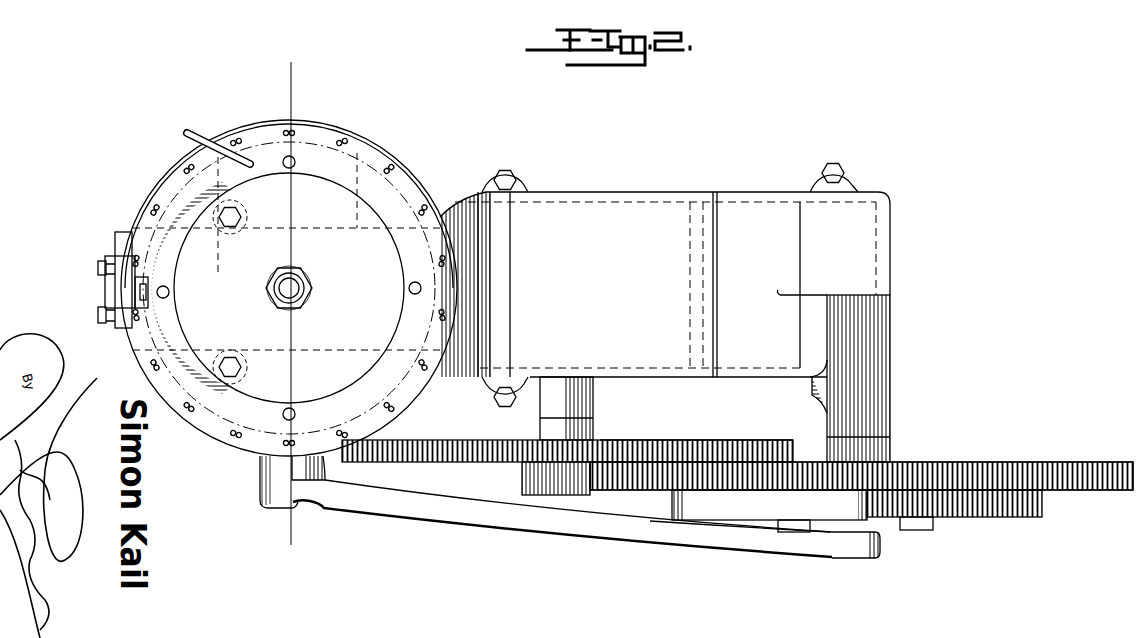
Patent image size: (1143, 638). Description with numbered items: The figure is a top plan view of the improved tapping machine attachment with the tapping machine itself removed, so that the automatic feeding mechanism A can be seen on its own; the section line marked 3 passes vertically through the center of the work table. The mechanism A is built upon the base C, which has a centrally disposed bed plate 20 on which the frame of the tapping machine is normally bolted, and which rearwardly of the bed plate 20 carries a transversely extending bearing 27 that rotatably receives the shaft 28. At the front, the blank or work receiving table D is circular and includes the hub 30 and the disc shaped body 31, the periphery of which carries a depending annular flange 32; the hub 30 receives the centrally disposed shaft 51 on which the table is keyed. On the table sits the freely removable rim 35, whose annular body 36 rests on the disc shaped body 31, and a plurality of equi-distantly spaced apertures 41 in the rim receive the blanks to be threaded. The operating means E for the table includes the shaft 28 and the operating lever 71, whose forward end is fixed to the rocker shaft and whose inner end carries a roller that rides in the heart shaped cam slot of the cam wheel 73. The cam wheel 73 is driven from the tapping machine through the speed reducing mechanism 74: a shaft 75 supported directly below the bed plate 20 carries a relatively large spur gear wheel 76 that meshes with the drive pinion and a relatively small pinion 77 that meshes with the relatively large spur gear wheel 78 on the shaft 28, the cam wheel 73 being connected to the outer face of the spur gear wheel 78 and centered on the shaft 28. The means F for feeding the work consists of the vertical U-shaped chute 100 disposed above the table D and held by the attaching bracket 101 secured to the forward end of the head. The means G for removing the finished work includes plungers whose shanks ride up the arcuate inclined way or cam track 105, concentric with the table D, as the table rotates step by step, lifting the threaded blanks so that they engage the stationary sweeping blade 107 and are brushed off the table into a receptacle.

The section line 3- 3 is at (289, 308).
The bed plate 20 is at (598, 215).
The bearing 27 is at (862, 342).
The shaft 28 is at (875, 452).
The hub 30 is at (312, 292).
The disc shaped body 31 is at (333, 163).
The depending annular flange 32 is at (868, 530).
The rim 35 is at (313, 213).
The annular body 36 is at (930, 530).
The apertures 41 is at (200, 430).
The shaft 51 is at (304, 276).
The operating lever 71 is at (707, 545).
The cam wheel 73 is at (1022, 490).
The speed reducing mechanism 74 is at (730, 457).
The shaft 75 is at (577, 420).
The spur gear wheel 76 is at (688, 452).
The pinion 77 is at (557, 492).
The spur gear wheel 78 is at (960, 462).
The chute 100 is at (147, 282).
The attaching bracket 101 is at (112, 290).
The inclined way or cam track 105 is at (402, 156).
The stationary sweeping blade 107 is at (215, 145).
The automatic feeding mechanism A is at (462, 200).
The base C is at (740, 225).
The blank or work receiving table D is at (308, 156).
The operating means E is at (478, 520).
The means for feeding the work F is at (105, 300).
The means for removing the work G is at (418, 178).